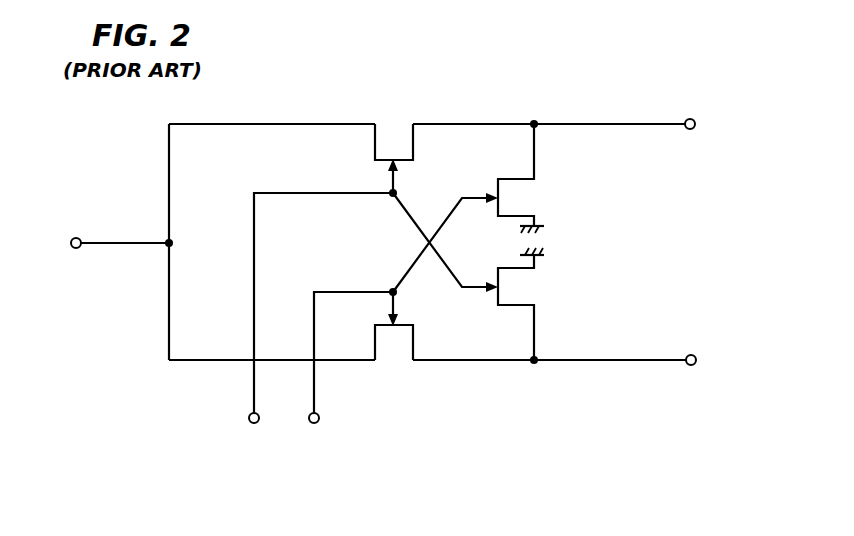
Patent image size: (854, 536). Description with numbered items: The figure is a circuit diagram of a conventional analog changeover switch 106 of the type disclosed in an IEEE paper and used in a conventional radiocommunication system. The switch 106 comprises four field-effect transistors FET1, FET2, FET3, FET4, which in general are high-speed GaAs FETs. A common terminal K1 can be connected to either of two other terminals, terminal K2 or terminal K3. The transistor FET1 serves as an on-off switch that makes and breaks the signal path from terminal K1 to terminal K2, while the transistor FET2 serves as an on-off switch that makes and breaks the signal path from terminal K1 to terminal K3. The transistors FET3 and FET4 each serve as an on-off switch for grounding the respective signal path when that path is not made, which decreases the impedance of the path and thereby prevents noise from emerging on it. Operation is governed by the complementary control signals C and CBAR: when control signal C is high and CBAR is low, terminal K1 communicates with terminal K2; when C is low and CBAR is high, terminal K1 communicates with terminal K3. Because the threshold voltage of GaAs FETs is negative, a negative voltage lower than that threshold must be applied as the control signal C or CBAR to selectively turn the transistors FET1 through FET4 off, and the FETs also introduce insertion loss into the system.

The analog changeover switch 106 is at (649, 97).
The terminal K1 is at (103, 246).
The terminal K2 is at (708, 125).
The terminal K3 is at (709, 362).
The field-effect transistor FET1 is at (389, 143).
The field-effect transistor FET2 is at (391, 345).
The field-effect transistor FET3 is at (546, 178).
The field-effect transistor FET4 is at (546, 304).
The control signal CONT C is at (319, 328).
The complementary control signal CONT-bar CBAR is at (321, 430).